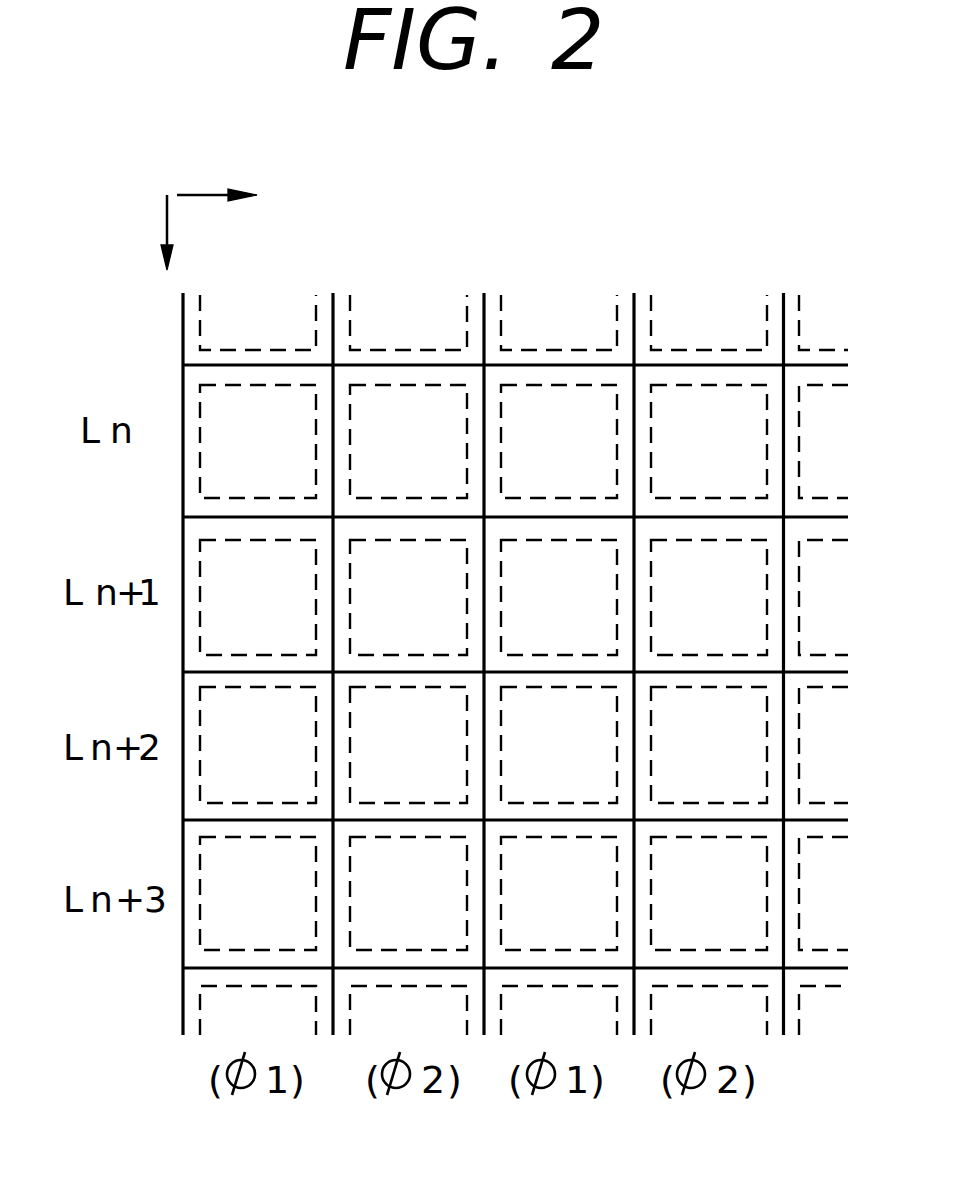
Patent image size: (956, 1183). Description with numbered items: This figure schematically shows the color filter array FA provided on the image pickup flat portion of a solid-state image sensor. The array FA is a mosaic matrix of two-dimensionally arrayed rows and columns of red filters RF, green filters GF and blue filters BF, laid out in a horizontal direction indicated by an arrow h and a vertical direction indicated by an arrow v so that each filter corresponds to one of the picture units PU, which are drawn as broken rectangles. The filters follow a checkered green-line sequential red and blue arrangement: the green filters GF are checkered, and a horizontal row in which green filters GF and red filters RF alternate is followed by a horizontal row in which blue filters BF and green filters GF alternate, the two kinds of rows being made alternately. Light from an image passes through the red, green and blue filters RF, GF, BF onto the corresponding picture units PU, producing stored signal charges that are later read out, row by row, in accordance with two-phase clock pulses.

The color filter array FA is at (400, 340).
The picture units PU is at (448, 387).
The green filters GF is at (483, 667).
The red filters RF is at (558, 594).
The blue filters BF is at (408, 745).
The arrow indicating horizontal direction h is at (217, 173).
The arrow indicating vertical direction v is at (151, 232).